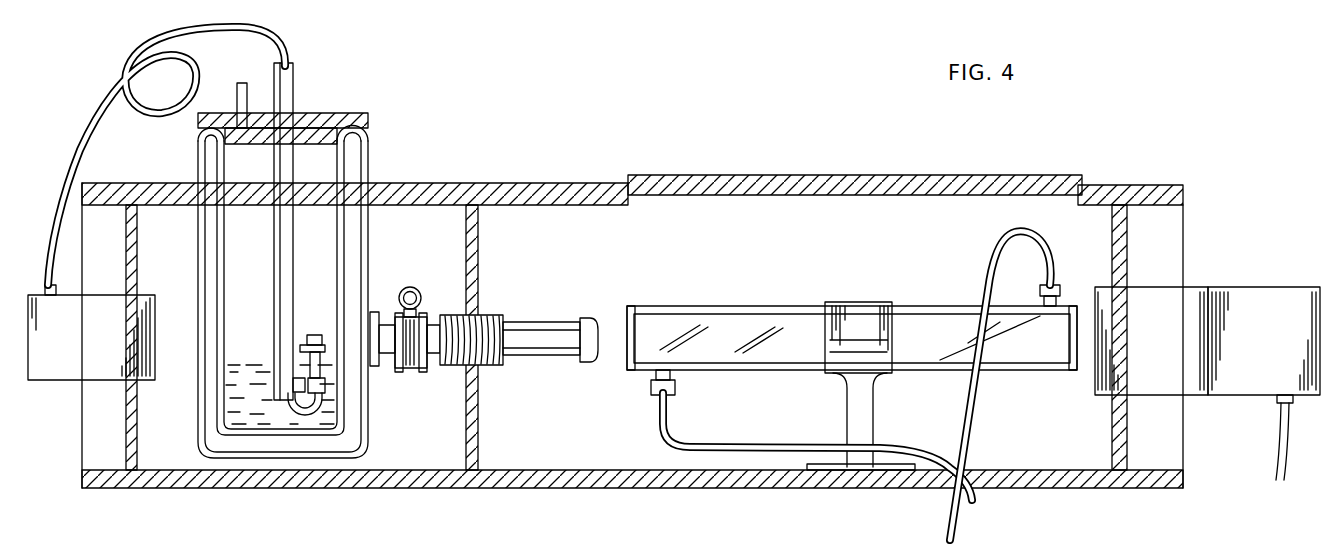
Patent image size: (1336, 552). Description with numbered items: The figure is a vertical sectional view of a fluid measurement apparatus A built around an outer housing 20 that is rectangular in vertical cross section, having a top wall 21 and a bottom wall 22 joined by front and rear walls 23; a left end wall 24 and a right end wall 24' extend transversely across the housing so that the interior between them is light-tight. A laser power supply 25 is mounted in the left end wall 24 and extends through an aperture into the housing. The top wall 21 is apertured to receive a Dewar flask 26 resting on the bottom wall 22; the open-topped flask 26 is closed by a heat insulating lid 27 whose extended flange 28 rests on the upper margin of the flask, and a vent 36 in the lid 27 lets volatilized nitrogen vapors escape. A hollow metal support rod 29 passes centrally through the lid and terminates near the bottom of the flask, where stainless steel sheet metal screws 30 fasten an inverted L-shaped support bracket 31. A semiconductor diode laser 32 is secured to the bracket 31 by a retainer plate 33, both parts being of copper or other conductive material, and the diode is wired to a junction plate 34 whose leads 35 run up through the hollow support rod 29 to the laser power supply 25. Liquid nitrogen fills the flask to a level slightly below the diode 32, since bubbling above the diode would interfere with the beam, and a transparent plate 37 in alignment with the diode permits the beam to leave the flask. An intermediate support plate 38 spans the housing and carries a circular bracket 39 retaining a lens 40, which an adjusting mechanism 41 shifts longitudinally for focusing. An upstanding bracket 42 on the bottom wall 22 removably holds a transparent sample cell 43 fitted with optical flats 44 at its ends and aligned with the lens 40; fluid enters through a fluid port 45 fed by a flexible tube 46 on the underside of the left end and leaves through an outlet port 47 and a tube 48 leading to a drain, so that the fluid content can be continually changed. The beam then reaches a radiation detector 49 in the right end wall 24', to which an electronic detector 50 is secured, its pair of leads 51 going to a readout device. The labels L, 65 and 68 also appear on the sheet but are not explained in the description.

The outer housing 20 is at (1123, 181).
The top wall 21 is at (527, 183).
The bottom wall 22 is at (660, 490).
The front and rear walls 23 is at (553, 225).
The left end wall 24 is at (97, 364).
The right end wall 24' is at (1165, 337).
The laser power supply 25 is at (78, 373).
The Dewar flask 26 is at (372, 157).
The heat insulating lid 27 is at (352, 113).
The extended flange 28 is at (370, 118).
The hollow metal support rod 29 is at (293, 80).
The stainless steel sheet metal screws 30 is at (295, 415).
The inverted L-shaped support bracket 31 is at (297, 372).
The semiconductor diode laser 32 is at (305, 335).
The retainer plate 33 is at (325, 345).
The junction plate 34 is at (325, 385).
The leads 35 is at (312, 416).
The vent 36 is at (241, 82).
The transparent plate 37 is at (374, 318).
The intermediate support plate 38 is at (478, 220).
The circular bracket 39 is at (530, 320).
The lens 40 is at (598, 330).
The adjusting mechanism 41 is at (422, 292).
The upstanding bracket 42 is at (843, 391).
The sample cell 43 is at (773, 303).
The optical flats 44 is at (622, 318).
The fluid port 45 is at (653, 380).
The flexible tube 46 is at (668, 428).
The outlet port 47 is at (1042, 300).
The tube 48 is at (978, 440).
The radiation detector 49 is at (1175, 310).
The electronic detector 50 is at (1243, 315).
The leads 51 is at (1283, 425).
The apparatus A is at (790, 176).
The lid L is at (915, 175).
The element of adjacent figure 65 is at (445, 551).
The element of adjacent figure 68 is at (770, 544).